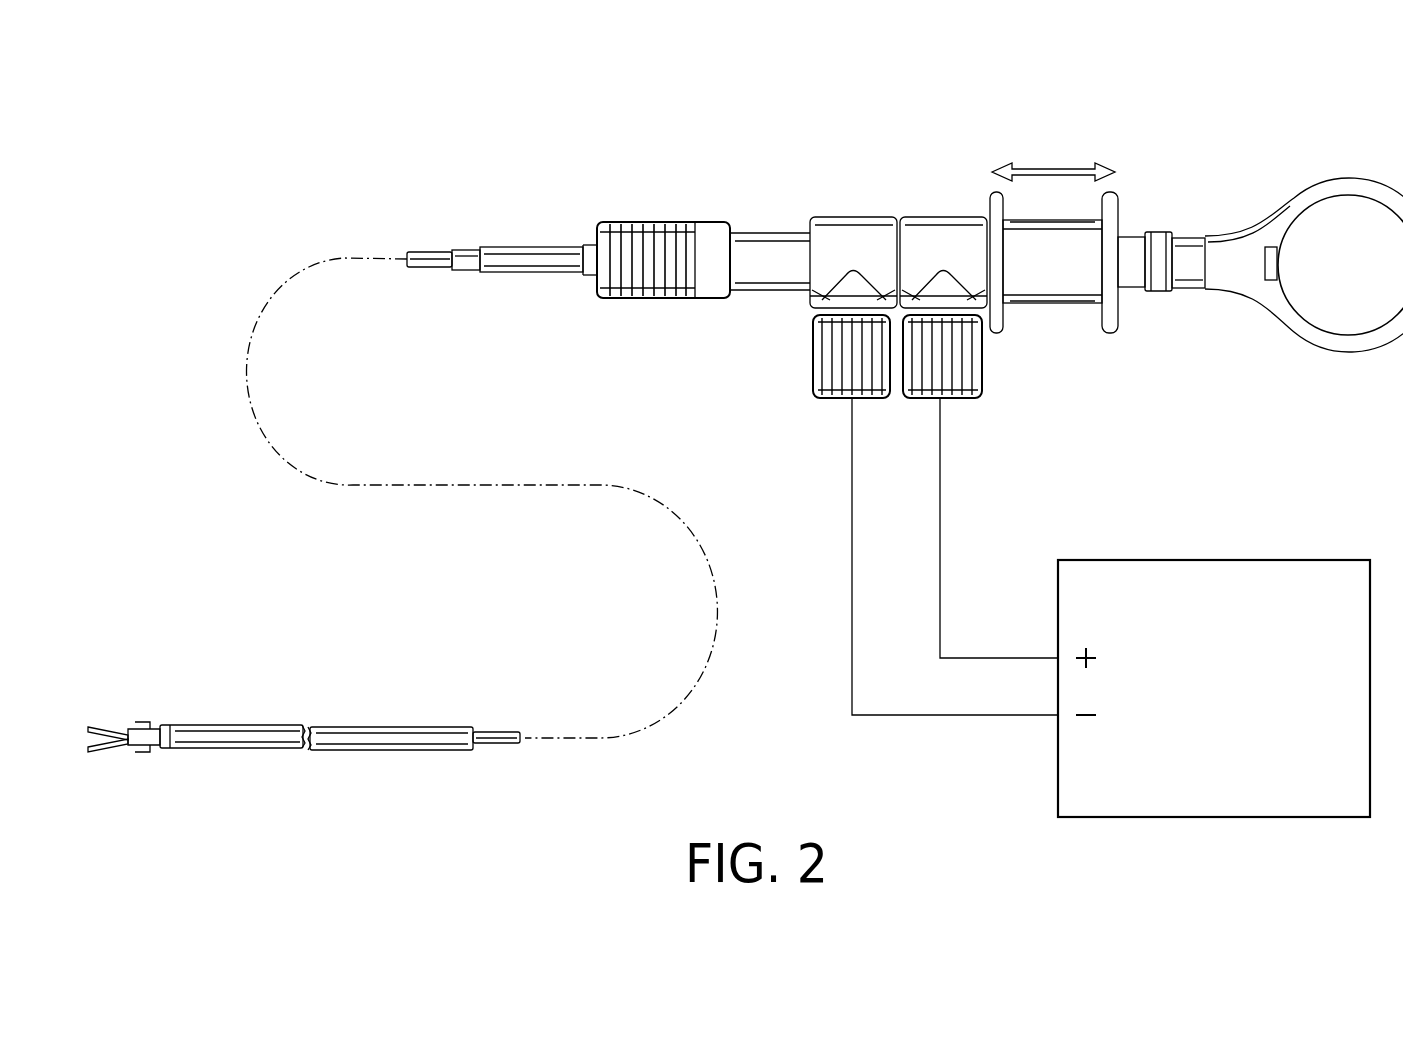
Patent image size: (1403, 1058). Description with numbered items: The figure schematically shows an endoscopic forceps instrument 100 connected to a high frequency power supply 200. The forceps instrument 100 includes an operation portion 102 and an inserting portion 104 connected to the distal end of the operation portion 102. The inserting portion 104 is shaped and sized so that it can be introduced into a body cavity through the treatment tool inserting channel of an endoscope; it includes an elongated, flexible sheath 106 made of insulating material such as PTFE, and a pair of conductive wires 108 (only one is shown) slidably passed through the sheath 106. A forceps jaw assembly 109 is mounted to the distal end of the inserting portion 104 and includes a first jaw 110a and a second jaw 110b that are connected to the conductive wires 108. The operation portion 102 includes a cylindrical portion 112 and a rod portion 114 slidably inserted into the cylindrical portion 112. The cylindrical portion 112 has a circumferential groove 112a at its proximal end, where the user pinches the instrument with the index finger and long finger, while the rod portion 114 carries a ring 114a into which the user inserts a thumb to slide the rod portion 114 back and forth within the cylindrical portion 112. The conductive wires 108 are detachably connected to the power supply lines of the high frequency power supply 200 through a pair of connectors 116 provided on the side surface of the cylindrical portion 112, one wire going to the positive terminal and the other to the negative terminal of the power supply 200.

The endoscopic forceps instrument 100 is at (630, 135).
The operation portion 102 is at (1122, 104).
The inserting portion 104 is at (468, 234).
The sheath 106 is at (466, 272).
The conductive wires 108 is at (437, 268).
The forceps jaw assembly 109 is at (168, 712).
The first jaw 110a is at (107, 752).
The second jaw 110b is at (100, 724).
The cylindrical portion 112 is at (958, 192).
The circumferential groove 112a is at (1050, 306).
The rod portion 114 is at (1162, 190).
The ring 114a is at (1345, 350).
The connectors 116 is at (835, 400).
The high frequency power supply 200 is at (1235, 530).